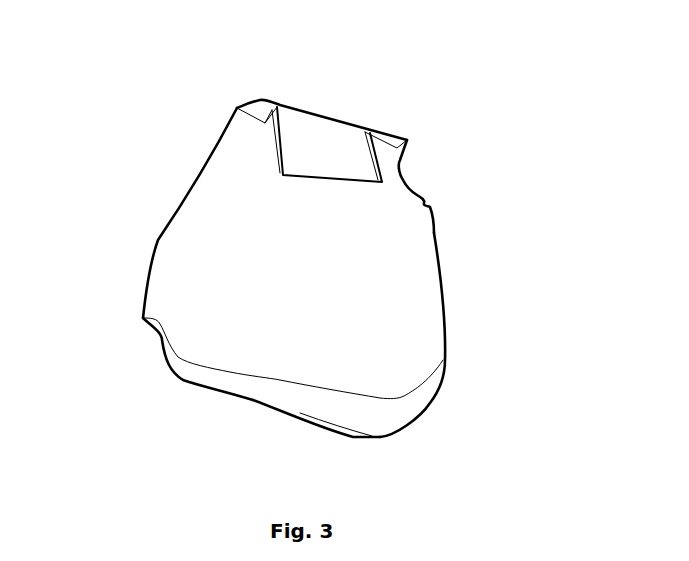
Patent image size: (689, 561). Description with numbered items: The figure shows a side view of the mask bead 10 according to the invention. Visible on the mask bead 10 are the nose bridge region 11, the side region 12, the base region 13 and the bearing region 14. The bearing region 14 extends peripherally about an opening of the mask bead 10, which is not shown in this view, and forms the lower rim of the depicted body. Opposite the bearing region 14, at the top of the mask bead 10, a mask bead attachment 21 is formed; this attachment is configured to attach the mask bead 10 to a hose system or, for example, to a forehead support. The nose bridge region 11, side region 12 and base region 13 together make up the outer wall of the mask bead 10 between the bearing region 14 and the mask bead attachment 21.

The mask bead 10 is at (423, 157).
The nose bridge region 11 is at (123, 316).
The side region 12 is at (302, 373).
The base region 13 is at (442, 411).
The bearing region 14 is at (347, 438).
The mask bead attachment 21 is at (305, 160).